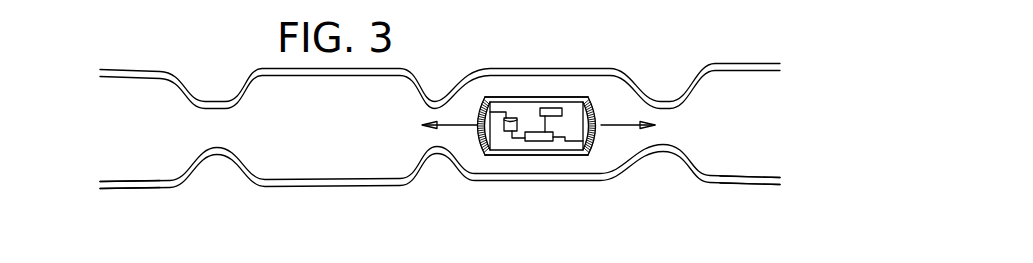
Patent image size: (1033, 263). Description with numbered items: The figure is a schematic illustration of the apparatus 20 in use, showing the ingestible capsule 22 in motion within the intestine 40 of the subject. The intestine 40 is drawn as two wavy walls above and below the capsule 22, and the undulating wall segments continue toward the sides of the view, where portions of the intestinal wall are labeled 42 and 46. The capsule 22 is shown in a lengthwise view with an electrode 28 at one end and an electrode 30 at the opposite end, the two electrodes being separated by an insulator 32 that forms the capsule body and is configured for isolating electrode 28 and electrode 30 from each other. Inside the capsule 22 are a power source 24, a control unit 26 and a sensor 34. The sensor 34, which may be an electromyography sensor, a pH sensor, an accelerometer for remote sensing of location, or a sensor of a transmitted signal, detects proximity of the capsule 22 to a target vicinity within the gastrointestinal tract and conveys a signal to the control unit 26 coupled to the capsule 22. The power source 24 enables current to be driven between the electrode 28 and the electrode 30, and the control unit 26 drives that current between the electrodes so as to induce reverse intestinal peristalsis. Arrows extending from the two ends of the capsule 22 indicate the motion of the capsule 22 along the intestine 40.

The apparatus 20 is at (620, 51).
The ingestible capsule 22 is at (508, 97).
The power source 24 is at (511, 132).
The control unit 26 is at (548, 141).
The electrode 28 is at (479, 146).
The electrode 30 is at (596, 152).
The insulator 32 is at (542, 97).
The sensor 34 is at (556, 108).
The intestine 40 is at (341, 183).
The graft end 42 is at (760, 185).
The graft end 46 is at (128, 184).